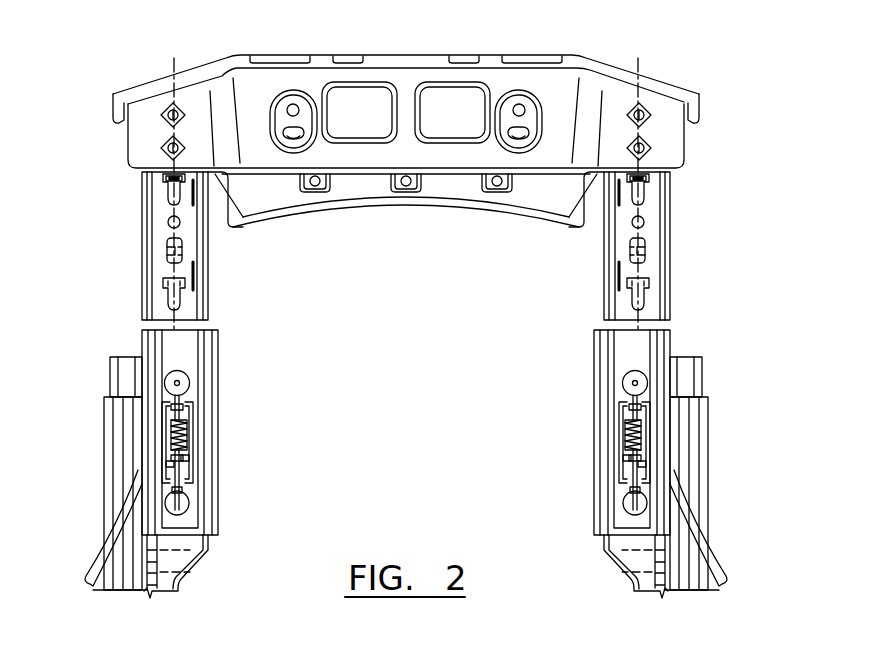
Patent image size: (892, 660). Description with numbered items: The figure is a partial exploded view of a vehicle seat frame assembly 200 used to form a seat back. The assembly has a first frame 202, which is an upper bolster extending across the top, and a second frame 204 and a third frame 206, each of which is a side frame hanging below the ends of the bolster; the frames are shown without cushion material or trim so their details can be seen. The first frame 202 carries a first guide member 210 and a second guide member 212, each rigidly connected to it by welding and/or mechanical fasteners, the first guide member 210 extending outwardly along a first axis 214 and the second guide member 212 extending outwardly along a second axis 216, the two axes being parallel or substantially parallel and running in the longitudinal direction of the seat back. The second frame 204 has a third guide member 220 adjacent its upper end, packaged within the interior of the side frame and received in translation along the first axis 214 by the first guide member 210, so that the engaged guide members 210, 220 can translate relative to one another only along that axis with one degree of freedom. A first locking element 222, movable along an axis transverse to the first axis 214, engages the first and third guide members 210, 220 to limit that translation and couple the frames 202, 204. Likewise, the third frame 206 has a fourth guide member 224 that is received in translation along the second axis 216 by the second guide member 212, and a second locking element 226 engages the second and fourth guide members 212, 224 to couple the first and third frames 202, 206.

The seat frame assembly 200 is at (669, 69).
The first frame 202 is at (472, 155).
The second frame 204 is at (692, 420).
The third frame 206 is at (122, 428).
The first guide member 210 is at (648, 208).
The second guide member 212 is at (162, 210).
The first axis 214 is at (622, 257).
The second axis 216 is at (178, 250).
The third guide member 220 is at (600, 356).
The first locking element 222 is at (625, 455).
The fourth guide member 224 is at (215, 356).
The second locking element 226 is at (188, 455).